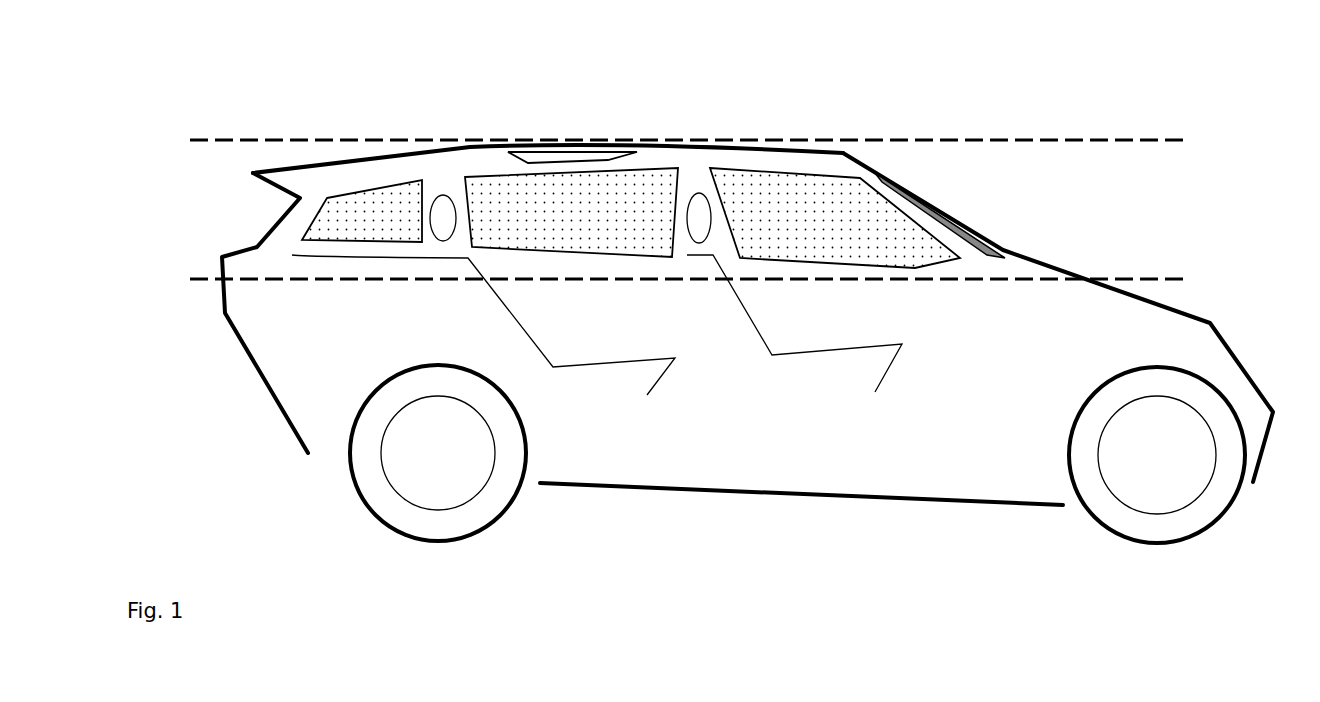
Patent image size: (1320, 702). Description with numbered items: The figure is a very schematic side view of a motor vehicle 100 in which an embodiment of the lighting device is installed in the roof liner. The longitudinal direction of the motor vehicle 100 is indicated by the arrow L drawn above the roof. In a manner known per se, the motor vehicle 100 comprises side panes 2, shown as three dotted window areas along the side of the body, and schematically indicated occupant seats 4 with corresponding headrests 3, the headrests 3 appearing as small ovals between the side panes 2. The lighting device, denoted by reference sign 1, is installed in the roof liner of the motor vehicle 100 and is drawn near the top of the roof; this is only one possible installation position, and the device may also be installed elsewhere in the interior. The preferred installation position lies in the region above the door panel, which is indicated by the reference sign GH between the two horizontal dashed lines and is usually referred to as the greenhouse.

The motor vehicle 100 is at (926, 101).
The lighting device 1 is at (558, 154).
The side panes 2 is at (370, 200).
The headrests 3 is at (443, 241).
The occupant seats 4 is at (527, 332).
The greenhouse region GH is at (1190, 140).
The longitudinal direction L is at (632, 18).